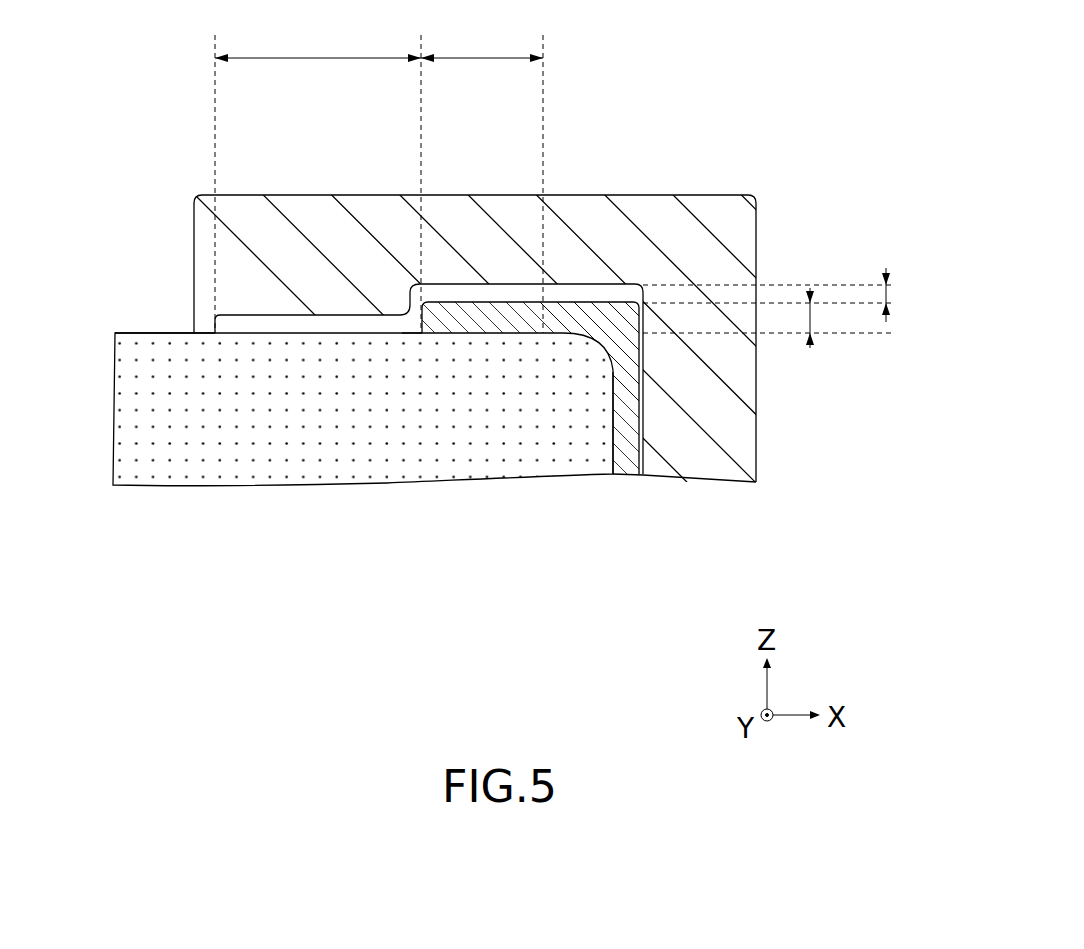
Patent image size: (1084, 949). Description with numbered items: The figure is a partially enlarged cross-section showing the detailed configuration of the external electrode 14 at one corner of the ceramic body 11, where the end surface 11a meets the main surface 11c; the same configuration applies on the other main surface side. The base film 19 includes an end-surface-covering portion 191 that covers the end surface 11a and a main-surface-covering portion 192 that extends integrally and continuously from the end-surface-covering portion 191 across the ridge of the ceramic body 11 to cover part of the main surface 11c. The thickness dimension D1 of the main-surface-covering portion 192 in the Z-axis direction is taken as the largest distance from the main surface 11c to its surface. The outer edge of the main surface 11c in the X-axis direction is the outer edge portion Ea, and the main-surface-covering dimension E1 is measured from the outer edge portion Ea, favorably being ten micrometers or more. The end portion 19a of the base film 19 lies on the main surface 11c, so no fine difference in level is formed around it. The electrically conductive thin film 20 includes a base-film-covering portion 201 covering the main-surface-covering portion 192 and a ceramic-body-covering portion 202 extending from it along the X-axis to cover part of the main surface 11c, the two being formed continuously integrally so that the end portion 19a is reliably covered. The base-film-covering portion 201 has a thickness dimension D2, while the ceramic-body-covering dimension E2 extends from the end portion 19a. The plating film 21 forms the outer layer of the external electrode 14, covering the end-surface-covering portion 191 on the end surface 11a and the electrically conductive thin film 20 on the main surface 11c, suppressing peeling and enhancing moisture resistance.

The ceramic body 11 is at (118, 318).
The end surface 11a is at (613, 448).
The main surface 11c is at (162, 332).
The external electrode 14 is at (542, 247).
The base film 19 is at (561, 357).
The end-surface-covering portion 191 is at (540, 313).
The main-surface-covering portion 192 is at (628, 380).
The end portion 19a is at (402, 333).
The electrically conductive thin film 20 is at (429, 216).
The base-film-covering portion 201 is at (447, 284).
The ceramic-body-covering portion 202 is at (365, 315).
The plating film 21 is at (738, 218).
The outer edge portion Ea is at (520, 312).
The main-surface-covering dimension E1 is at (482, 41).
The ceramic-body-covering dimension E2 is at (318, 41).
The thickness dimension D1 is at (834, 318).
The thickness dimension D2 is at (909, 295).